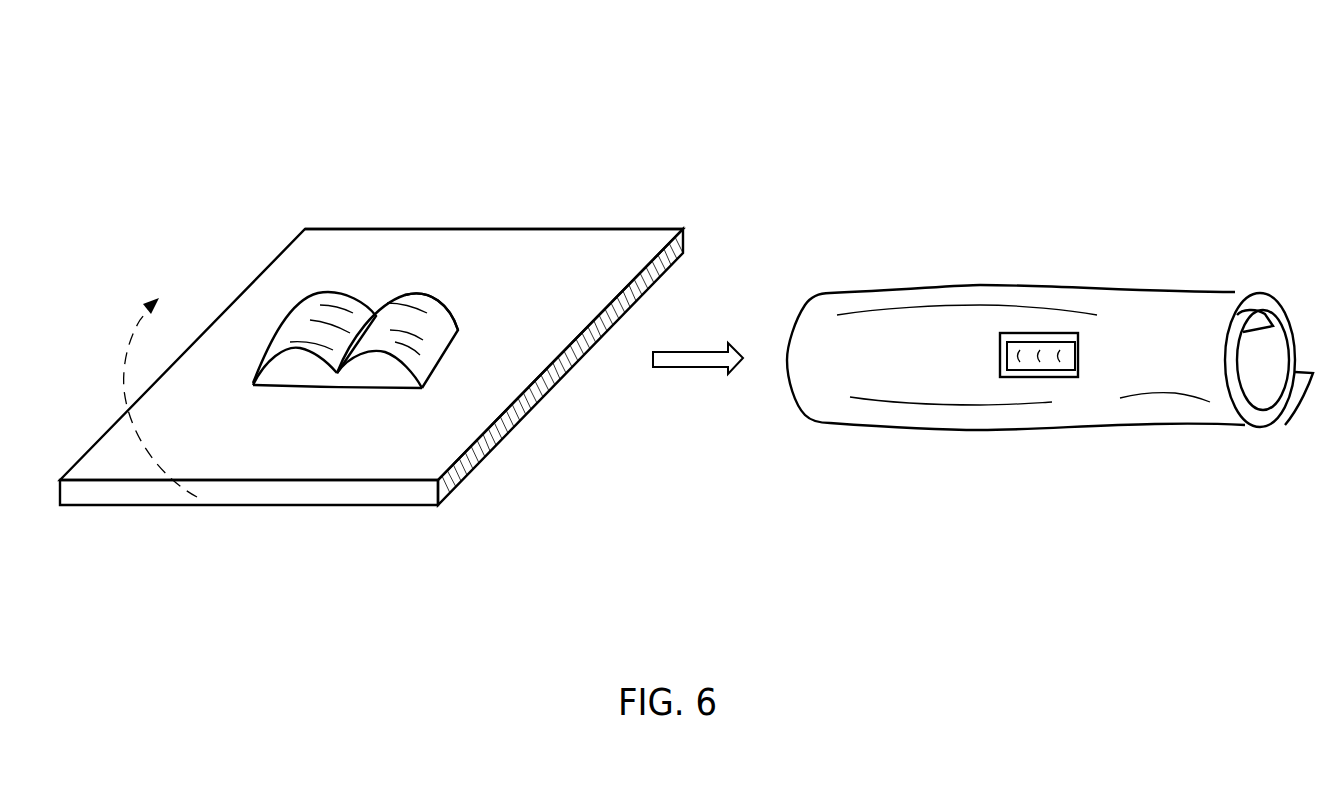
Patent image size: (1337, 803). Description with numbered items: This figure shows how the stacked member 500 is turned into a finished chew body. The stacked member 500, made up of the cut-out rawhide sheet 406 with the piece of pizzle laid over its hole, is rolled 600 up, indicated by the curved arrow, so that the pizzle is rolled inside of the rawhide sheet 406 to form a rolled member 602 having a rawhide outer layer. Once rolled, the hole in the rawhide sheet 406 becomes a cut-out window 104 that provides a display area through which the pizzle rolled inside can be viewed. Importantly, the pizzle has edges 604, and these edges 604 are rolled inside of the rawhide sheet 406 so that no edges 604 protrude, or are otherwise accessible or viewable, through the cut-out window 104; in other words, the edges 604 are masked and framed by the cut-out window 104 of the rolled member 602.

The cut-out window 104 is at (1070, 377).
The cut-out rawhide sheet 406 is at (482, 242).
The stacked member 500 is at (348, 194).
The rolled 600 is at (123, 352).
The rolled member 602 is at (922, 290).
The edges 604 is at (441, 375).